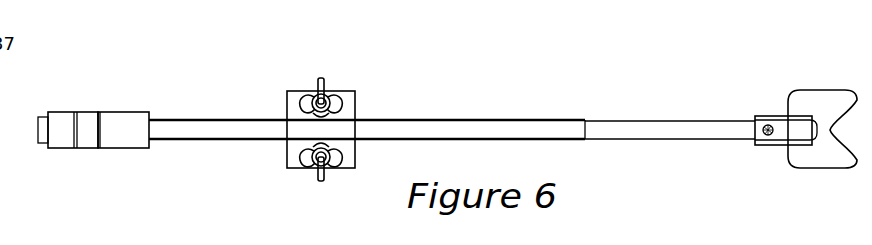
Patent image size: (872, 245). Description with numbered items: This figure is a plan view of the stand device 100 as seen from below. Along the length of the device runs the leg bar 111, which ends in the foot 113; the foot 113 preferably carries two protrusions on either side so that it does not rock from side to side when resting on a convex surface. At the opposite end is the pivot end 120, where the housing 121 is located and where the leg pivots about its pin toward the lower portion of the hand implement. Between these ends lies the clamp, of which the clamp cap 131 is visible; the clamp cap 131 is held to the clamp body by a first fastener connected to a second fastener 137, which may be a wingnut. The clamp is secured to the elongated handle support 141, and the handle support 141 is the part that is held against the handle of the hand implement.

The stand device 100 is at (641, 60).
The leg bar 111 is at (681, 125).
The foot 113 is at (818, 97).
The pivot end 120 is at (58, 104).
The housing 121 is at (115, 110).
The clamp cap 131 is at (295, 100).
The second fastener 137 is at (323, 98).
The handle support 141 is at (473, 126).